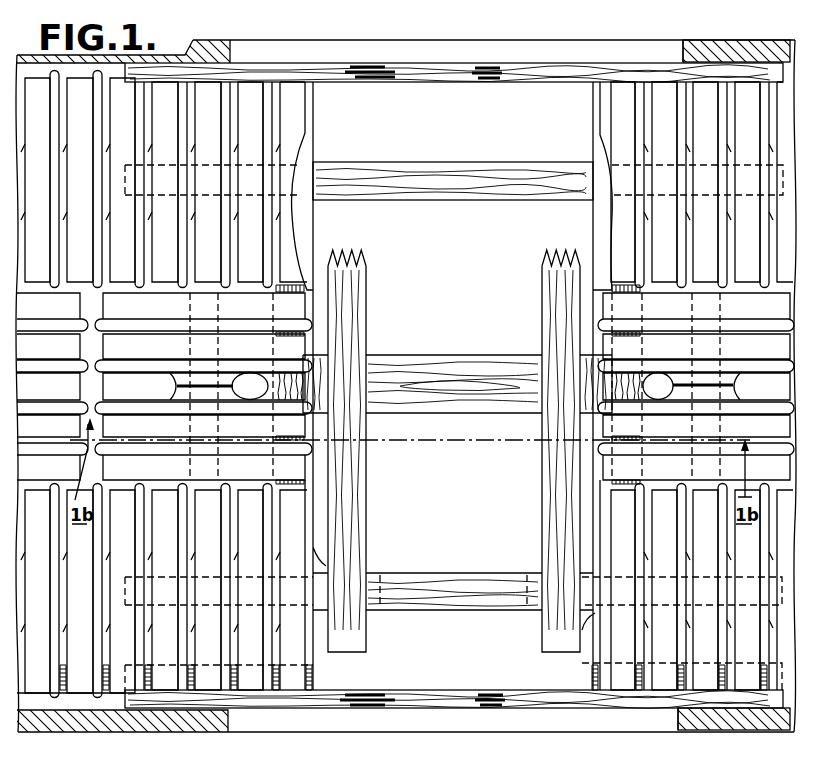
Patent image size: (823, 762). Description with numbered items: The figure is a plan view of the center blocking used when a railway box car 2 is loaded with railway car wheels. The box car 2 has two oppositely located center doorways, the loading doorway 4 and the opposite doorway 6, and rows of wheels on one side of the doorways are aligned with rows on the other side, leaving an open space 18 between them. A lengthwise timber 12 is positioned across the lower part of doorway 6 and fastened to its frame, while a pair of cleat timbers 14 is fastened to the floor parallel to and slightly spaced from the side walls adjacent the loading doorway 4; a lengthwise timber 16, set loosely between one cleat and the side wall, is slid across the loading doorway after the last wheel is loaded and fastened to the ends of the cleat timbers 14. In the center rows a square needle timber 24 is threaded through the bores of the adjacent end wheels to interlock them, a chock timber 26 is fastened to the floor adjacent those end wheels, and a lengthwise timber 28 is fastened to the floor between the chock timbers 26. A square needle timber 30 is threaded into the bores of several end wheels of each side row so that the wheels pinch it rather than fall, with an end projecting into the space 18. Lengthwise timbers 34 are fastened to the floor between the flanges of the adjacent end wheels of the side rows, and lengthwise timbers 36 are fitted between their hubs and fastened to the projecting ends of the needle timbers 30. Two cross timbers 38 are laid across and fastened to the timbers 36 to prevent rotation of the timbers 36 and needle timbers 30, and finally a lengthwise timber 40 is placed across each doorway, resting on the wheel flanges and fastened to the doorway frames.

The railway box car 2 is at (712, 48).
The loading doorway 4 is at (678, 722).
The doorway 6 is at (683, 50).
The lengthwise timber 12 is at (441, 75).
The cleat timbers 14 is at (590, 677).
The lengthwise timber 16 is at (443, 690).
The open space 18 is at (470, 281).
The square needle timber 24 is at (735, 346).
The chock timber 26 is at (643, 388).
The lengthwise timber 28 is at (453, 360).
The square needle timber 30 is at (655, 578).
The lengthwise timbers 34 is at (488, 162).
The lengthwise timbers 36 is at (447, 573).
The cross timbers 38 is at (545, 466).
The lengthwise timber 40 is at (470, 745).